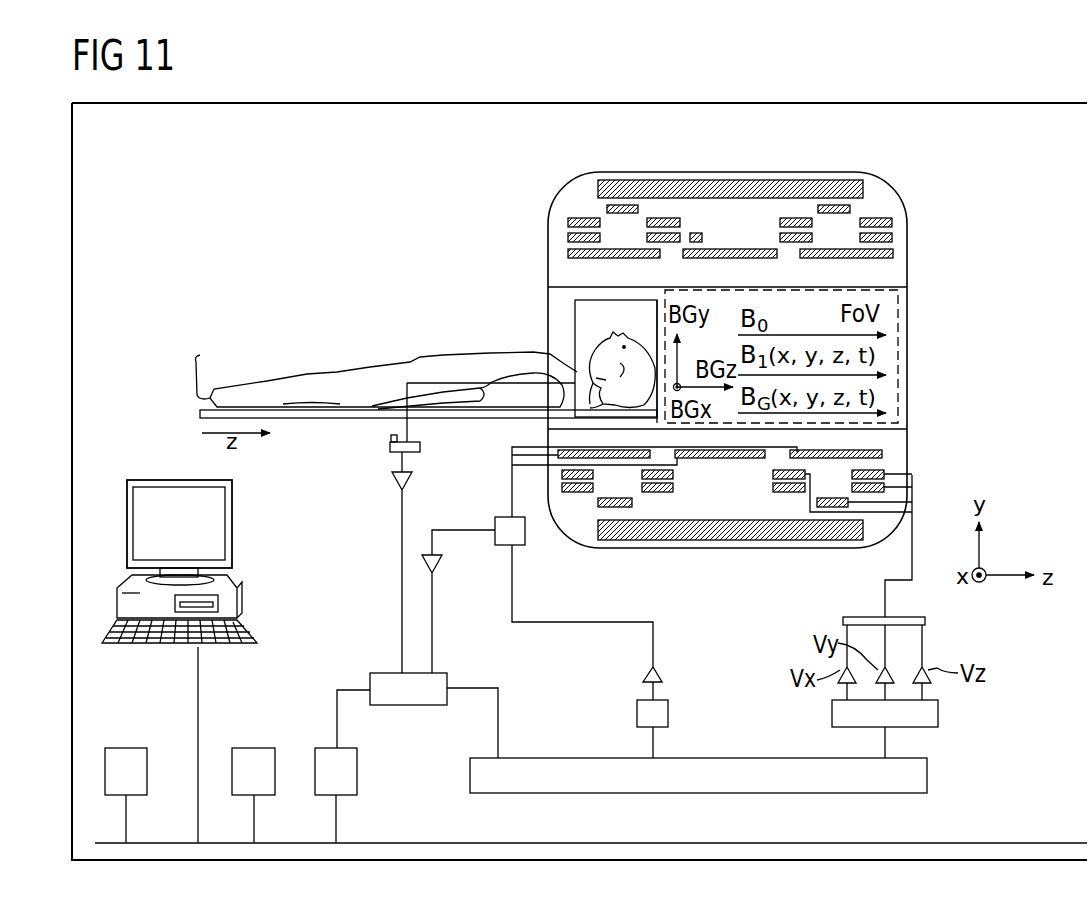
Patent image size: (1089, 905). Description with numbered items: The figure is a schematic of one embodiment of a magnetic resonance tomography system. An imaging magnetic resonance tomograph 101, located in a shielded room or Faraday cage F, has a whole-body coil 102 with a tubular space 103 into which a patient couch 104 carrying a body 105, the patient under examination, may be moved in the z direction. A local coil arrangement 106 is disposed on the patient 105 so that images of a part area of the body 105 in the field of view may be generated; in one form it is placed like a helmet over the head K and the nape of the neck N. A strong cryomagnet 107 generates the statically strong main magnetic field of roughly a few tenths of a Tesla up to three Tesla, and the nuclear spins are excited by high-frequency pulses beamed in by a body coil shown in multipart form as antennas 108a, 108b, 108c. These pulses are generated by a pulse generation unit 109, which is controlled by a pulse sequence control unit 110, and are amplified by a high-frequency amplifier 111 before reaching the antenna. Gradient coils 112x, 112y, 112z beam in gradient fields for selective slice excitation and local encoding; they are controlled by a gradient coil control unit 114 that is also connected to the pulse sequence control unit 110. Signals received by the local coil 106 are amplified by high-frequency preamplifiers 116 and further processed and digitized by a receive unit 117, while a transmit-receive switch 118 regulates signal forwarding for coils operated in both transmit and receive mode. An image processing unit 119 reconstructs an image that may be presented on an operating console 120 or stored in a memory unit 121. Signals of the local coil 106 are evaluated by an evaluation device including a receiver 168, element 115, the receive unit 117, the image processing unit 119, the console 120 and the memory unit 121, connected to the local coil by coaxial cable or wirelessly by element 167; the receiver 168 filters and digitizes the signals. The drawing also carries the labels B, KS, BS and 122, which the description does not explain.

The magnetic resonance tomograph 101 is at (1012, 200).
The whole-body coil 102 is at (776, 172).
The space 103 is at (922, 358).
The patient couch 104 is at (307, 418).
The body 105 is at (387, 364).
The local coil arrangement 106 is at (575, 310).
The cryomagnet 107 is at (628, 180).
The body coil part 108a is at (568, 255).
The body coil part 108b is at (722, 249).
The body coil part 108c is at (893, 255).
The pulse generation unit 109 is at (668, 713).
The pulse sequence control unit 110 is at (928, 773).
The high-frequency amplifier 111 is at (662, 675).
The gradient coil 112x is at (893, 237).
The gradient coil 112y is at (893, 222).
The gradient coil 112z is at (850, 210).
The gradient coil control unit 114 is at (938, 713).
The evaluation device element 115 is at (392, 478).
The high-frequency preamplifier 116 is at (435, 567).
The receive unit 117 is at (410, 707).
The transmit-receive switch 118 is at (495, 520).
The image processing unit 119 is at (323, 748).
The operating console 120 is at (240, 598).
The memory unit 121 is at (127, 748).
The interface 122 is at (255, 748).
The wireless connection element 167 is at (391, 438).
The receiver 168 is at (420, 447).
The Faraday cage F is at (503, 103).
The body B is at (330, 382).
The head K is at (590, 347).
The nape of the neck N is at (580, 380).
The coil switch KS is at (695, 233).
The image slice BS is at (640, 321).